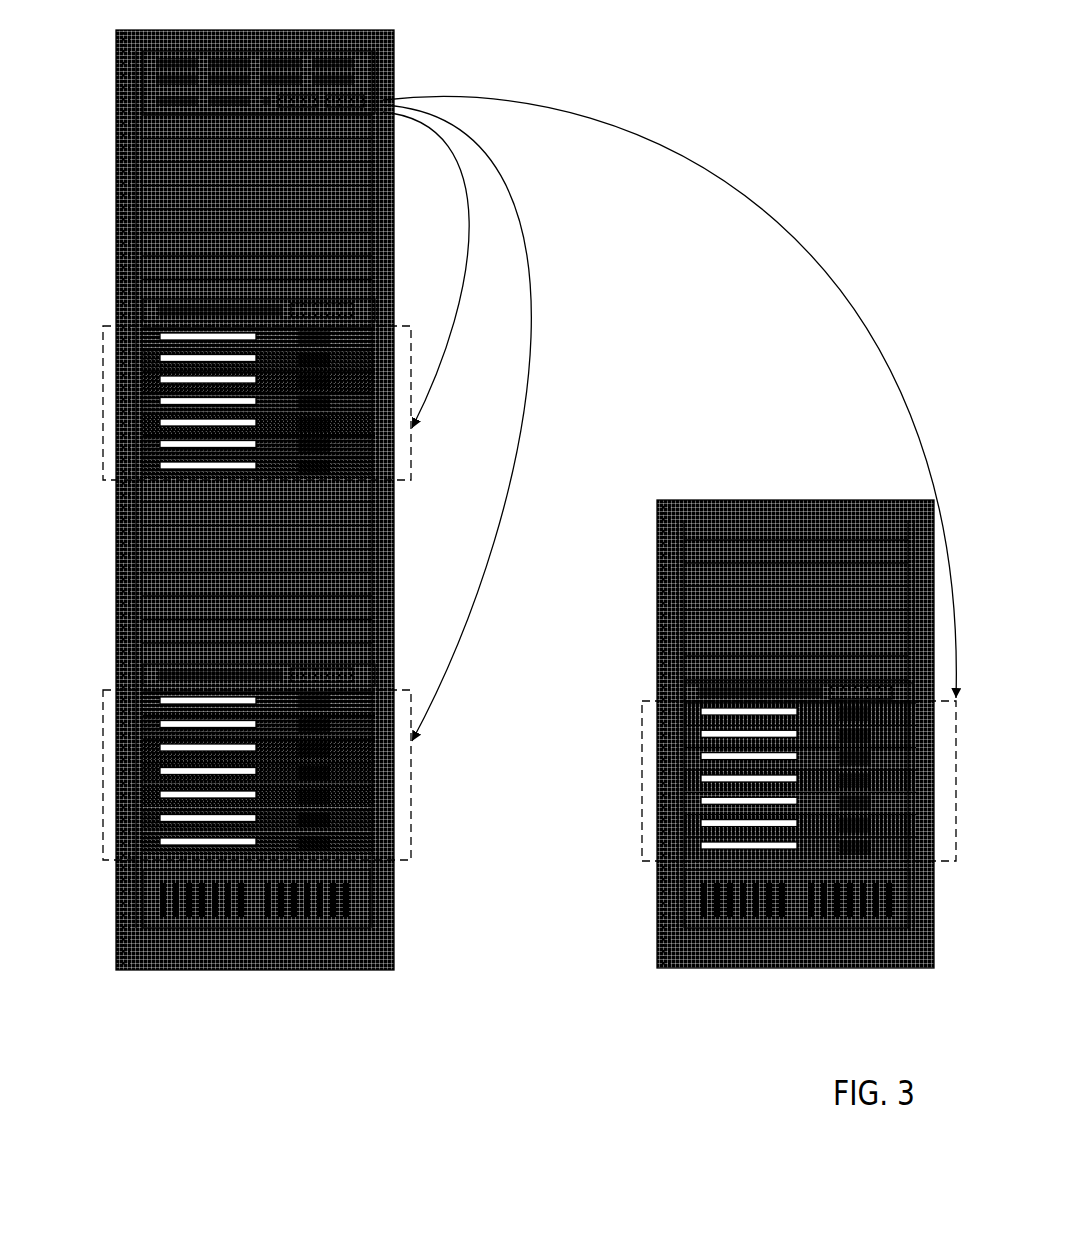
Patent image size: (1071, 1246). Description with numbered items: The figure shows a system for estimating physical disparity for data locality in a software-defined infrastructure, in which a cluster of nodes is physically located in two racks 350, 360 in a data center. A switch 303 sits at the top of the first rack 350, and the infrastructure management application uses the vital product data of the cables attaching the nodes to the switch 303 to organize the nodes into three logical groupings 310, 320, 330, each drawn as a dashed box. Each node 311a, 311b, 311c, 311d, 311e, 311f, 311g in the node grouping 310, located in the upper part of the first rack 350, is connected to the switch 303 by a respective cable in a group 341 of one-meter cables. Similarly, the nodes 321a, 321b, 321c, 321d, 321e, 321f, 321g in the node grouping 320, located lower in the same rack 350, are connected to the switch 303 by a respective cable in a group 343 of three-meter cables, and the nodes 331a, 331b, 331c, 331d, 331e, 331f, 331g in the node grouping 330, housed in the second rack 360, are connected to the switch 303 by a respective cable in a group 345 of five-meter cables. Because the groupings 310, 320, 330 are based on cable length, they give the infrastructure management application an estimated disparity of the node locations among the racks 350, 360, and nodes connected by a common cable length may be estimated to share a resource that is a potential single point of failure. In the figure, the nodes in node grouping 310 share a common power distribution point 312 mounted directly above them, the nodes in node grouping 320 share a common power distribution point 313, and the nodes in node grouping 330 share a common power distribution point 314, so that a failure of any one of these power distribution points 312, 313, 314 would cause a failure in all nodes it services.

The switch 303 is at (362, 84).
The node grouping 310 is at (404, 314).
The node 311a is at (136, 326).
The node 311b is at (136, 348).
The node 311c is at (136, 370).
The node 311d is at (136, 392).
The node 311e is at (136, 414).
The node 311f is at (136, 436).
The node 311g is at (136, 460).
The power distribution point 312 is at (130, 301).
The power distribution point 313 is at (130, 666).
The power distribution point 314 is at (674, 683).
The node grouping 320 is at (404, 678).
The node 321a is at (136, 690).
The node 321b is at (136, 714).
The node 321c is at (136, 738).
The node 321d is at (136, 761).
The node 321e is at (136, 785).
The node 321f is at (136, 808).
The node 321g is at (136, 832).
The node grouping 330 is at (632, 858).
The node 331a is at (678, 705).
The node 331b is at (678, 727).
The node 331c is at (678, 750).
The node 331d is at (678, 772).
The node 331e is at (678, 794).
The node 331f is at (678, 817).
The node 331g is at (678, 840).
The group of 1 m cables 341 is at (422, 391).
The group of 3 m cables 343 is at (511, 450).
The group of 5 m cables 345 is at (840, 248).
The rack 350 is at (226, 967).
The rack 360 is at (760, 964).